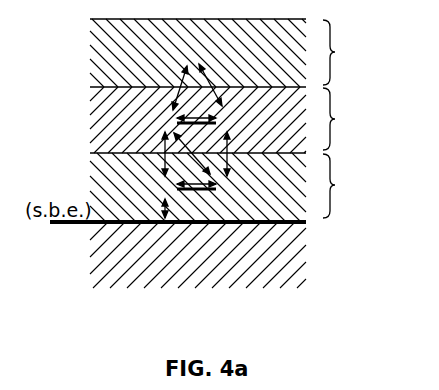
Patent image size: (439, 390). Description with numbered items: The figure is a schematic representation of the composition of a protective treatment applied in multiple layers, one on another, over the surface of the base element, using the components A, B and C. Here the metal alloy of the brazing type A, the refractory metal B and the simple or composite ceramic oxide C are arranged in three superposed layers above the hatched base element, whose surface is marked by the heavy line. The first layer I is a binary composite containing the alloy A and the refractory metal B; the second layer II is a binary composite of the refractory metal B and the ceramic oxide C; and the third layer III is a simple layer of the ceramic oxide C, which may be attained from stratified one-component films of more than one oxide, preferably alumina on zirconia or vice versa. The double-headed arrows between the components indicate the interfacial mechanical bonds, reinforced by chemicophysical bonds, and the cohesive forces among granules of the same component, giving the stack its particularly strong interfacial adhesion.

The metal alloy of the type for strong brazing A is at (184, 198).
The refractory metal B is at (196, 155).
The simple or composite ceramic oxide C is at (203, 108).
The first layer I is at (368, 186).
The second layer II is at (368, 119).
The third layer III is at (361, 52).